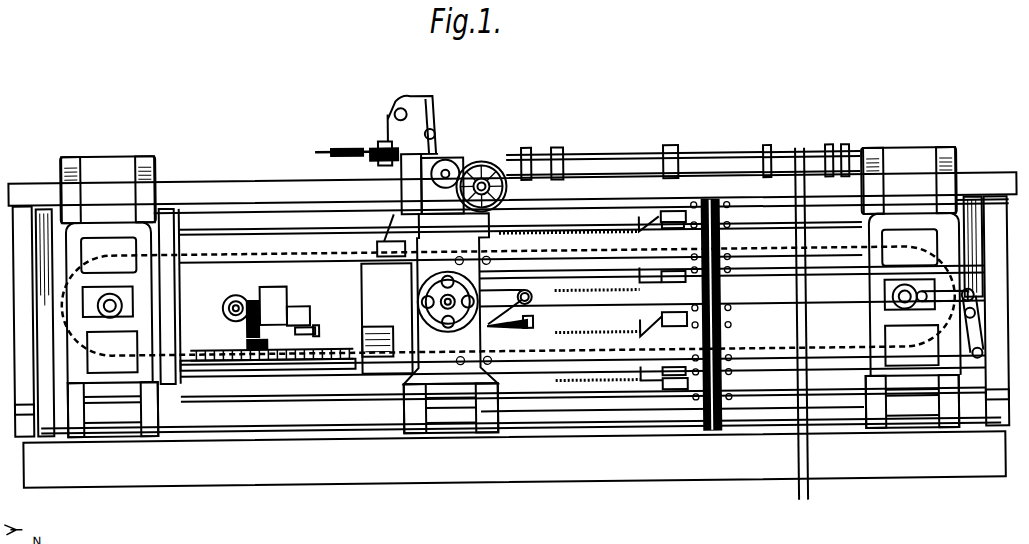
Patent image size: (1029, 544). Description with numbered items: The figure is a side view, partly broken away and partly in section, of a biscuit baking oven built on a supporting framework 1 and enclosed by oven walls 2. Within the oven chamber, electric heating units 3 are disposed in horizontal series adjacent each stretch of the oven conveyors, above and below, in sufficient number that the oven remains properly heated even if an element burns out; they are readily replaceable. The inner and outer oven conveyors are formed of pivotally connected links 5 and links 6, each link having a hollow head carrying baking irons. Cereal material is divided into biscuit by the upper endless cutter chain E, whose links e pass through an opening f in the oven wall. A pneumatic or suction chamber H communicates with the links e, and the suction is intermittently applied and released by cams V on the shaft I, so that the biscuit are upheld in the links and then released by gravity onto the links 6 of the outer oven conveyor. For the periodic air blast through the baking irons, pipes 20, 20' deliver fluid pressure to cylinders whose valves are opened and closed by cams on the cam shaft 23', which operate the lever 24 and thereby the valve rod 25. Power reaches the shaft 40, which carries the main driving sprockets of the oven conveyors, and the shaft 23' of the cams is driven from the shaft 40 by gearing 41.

The supporting framework 1 is at (514, 452).
The oven walls 2 is at (513, 304).
The electric heating units 3 is at (593, 300).
The links of inner oven conveyor 5 is at (553, 509).
The links of outer oven conveyor 6 is at (608, 195).
The pipe 20 is at (338, 141).
The pipe 20' is at (507, 323).
The shaft of the cams 23' is at (466, 182).
The lever 24 is at (438, 112).
The valve rod 25 is at (388, 128).
The shaft 40 is at (441, 302).
The gearing 41 is at (490, 165).
The cams V is at (236, 290).
The upper endless cutter chain E is at (252, 325).
The pneumatic or suction chamber H is at (291, 292).
The shaft I is at (247, 340).
The opening f is at (319, 313).
The links of the endless chain e is at (268, 357).